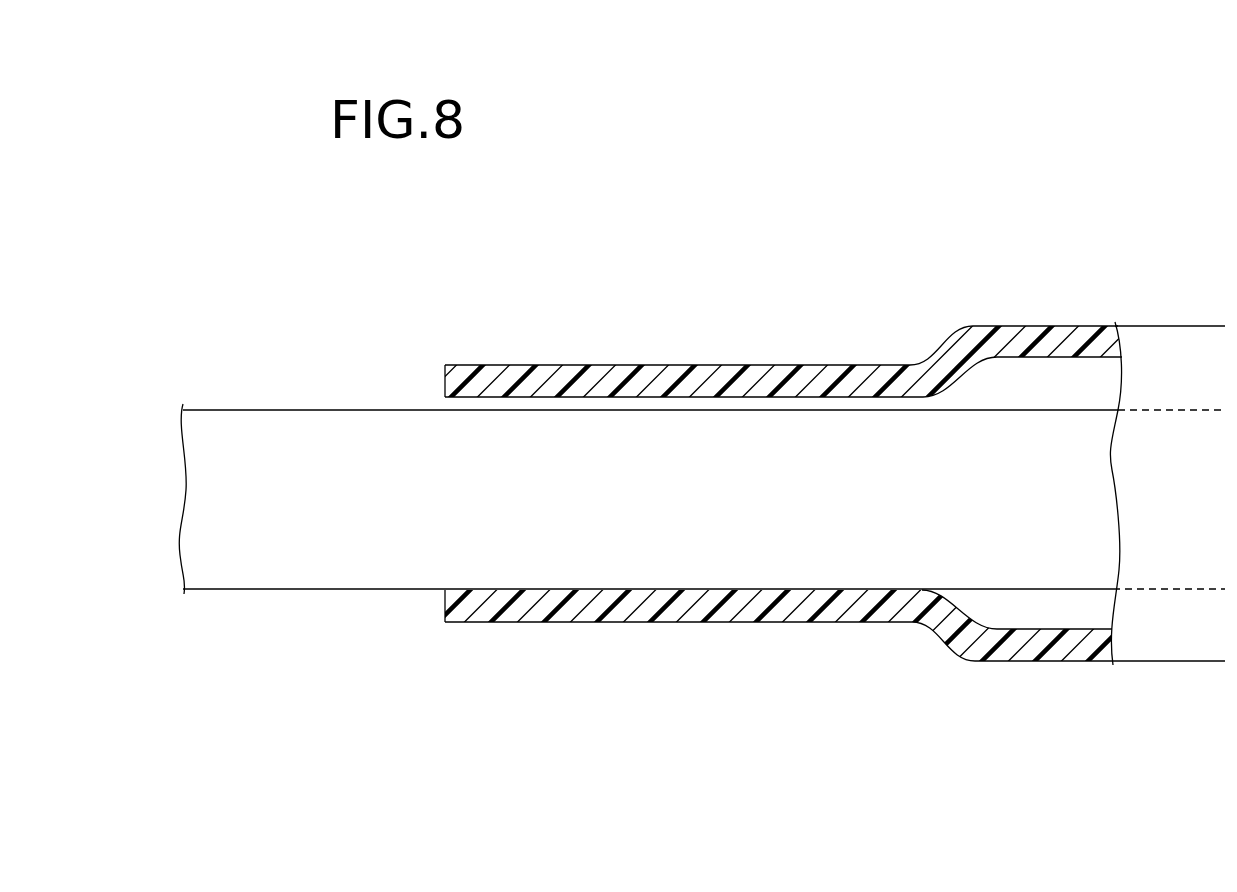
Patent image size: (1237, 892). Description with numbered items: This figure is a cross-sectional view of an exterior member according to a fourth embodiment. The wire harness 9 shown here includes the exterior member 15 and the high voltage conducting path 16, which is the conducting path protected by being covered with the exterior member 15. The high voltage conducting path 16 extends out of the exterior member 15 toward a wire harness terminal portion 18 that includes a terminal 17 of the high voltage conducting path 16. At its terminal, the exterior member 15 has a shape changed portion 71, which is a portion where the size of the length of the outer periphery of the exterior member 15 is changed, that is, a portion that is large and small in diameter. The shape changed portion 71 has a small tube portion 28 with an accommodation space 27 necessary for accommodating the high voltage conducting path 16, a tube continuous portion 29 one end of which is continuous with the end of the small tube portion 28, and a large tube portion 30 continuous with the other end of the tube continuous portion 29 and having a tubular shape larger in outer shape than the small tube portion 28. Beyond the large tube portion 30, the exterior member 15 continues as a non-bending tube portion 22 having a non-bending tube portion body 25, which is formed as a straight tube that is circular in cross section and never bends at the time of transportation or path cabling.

The wire harness 9 is at (957, 218).
The exterior member 15 is at (1159, 327).
The high voltage conducting path 16 is at (1053, 410).
The terminal 17 is at (287, 410).
The wire harness terminal portion 18 is at (284, 590).
The non-bending tube portion 22 is at (1139, 650).
The non-bending tube portion body 25 is at (1197, 650).
The accommodation space 27 is at (833, 405).
The small tube portion 28 is at (624, 365).
The tube continuous portion 29 is at (943, 346).
The large tube portion 30 is at (1022, 326).
The shape changed portion 71 is at (696, 337).